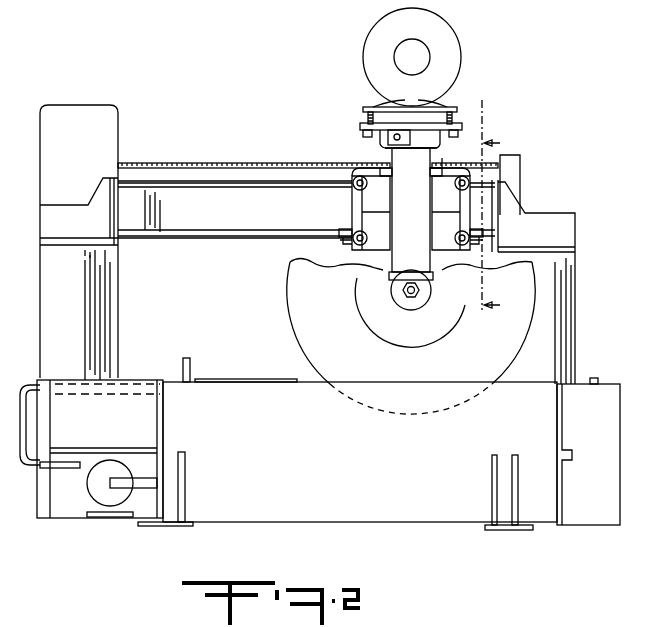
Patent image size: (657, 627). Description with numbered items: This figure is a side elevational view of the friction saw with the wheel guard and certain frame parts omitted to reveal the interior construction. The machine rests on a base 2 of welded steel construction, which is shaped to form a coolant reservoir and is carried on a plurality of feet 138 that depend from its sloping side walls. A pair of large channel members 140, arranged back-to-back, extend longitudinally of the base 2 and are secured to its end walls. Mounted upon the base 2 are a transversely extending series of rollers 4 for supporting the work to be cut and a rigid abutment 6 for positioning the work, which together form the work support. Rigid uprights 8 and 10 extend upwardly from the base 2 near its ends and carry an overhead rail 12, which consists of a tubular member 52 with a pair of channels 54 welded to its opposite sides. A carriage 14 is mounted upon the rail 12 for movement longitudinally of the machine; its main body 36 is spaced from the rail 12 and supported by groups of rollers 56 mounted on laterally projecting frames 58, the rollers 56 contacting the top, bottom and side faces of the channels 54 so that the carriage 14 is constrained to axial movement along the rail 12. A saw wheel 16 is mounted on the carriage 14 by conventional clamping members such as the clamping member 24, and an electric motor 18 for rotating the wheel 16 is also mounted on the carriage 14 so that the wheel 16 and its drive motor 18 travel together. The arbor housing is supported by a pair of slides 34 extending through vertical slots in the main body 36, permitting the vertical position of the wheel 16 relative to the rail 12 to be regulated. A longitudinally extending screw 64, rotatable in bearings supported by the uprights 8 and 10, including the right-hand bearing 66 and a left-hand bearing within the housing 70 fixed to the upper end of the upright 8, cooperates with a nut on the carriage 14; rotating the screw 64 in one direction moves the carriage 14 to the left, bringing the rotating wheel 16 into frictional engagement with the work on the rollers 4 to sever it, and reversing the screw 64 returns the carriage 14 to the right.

The base 2 is at (370, 505).
The rollers 4 is at (212, 378).
The rigid abutment 6 is at (183, 362).
The upright 8 is at (42, 272).
The upright 10 is at (569, 282).
The overhead rail 12 is at (226, 238).
The carriage 14 is at (355, 198).
The saw wheel 16 is at (316, 304).
The electric motor 18 is at (367, 50).
The clamping member 24 is at (431, 330).
The slide 34 is at (421, 208).
The main body 36 is at (435, 168).
The tubular member 52 is at (176, 184).
The channel 54 is at (207, 218).
The rollers 56 is at (350, 238).
The laterally projecting frame 58 is at (358, 222).
The screw 64 is at (244, 162).
The right-hand bearing 66 is at (520, 166).
The housing 70 is at (43, 158).
The feet 138 is at (178, 527).
The channel member 140 is at (125, 423).